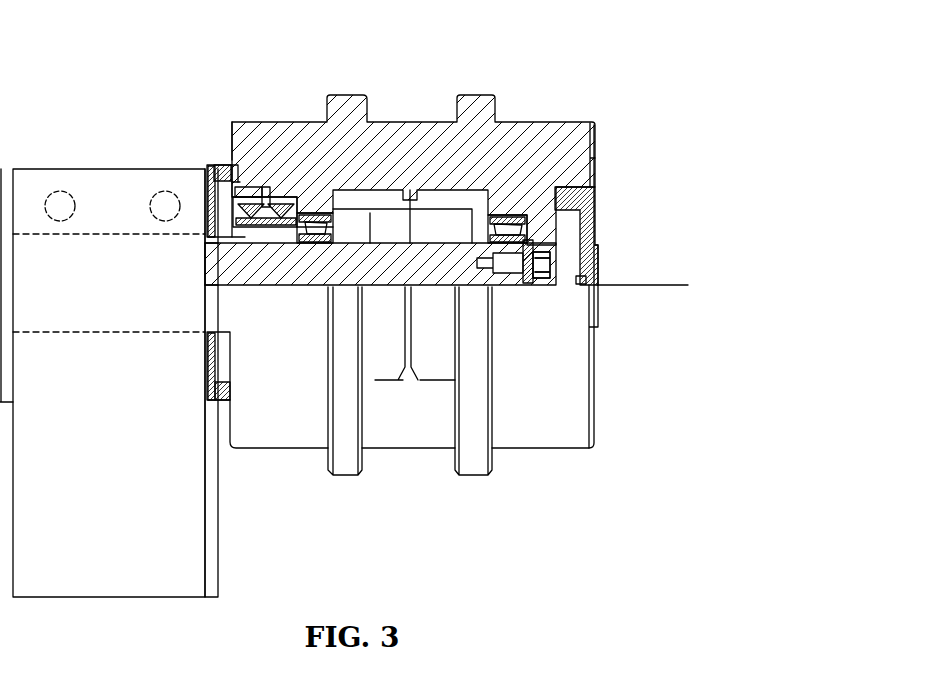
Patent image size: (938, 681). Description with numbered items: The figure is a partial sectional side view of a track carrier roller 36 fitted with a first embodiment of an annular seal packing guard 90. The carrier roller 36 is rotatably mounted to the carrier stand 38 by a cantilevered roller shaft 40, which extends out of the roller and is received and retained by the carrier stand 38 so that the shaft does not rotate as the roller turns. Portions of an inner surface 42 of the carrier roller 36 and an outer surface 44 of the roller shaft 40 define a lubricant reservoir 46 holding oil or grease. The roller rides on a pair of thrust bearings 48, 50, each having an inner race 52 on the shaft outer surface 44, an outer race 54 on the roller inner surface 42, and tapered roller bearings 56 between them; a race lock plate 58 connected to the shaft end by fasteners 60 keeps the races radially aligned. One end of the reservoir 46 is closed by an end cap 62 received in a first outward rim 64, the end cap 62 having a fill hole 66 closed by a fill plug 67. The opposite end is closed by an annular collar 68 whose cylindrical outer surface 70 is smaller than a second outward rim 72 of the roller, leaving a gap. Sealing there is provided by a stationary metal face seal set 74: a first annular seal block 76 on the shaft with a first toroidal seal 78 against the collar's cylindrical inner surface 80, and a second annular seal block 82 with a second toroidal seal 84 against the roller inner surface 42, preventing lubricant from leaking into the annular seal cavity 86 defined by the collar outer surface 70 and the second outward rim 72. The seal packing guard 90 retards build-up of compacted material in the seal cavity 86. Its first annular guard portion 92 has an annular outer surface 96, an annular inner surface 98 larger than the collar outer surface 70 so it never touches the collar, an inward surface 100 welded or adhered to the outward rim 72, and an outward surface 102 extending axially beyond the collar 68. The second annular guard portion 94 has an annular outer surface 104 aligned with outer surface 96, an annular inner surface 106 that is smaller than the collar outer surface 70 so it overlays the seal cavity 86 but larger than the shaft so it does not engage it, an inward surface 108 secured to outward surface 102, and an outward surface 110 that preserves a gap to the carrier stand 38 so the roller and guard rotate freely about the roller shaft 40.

The carrier roller 36 is at (527, 423).
The carrier stand 38 is at (67, 187).
The roller shaft 40 is at (377, 387).
The inner surface 42 is at (442, 230).
The outer surface 44 is at (436, 387).
The lubricant reservoir 46 is at (383, 223).
The thrust bearing 48 is at (303, 246).
The thrust bearing 50 is at (525, 190).
The inner race 52 is at (316, 245).
The outer race 54 is at (305, 195).
The tapered roller bearings 56 is at (370, 190).
The race lock plate 58 is at (540, 284).
The fasteners 60 is at (543, 264).
The end cap 62 is at (598, 197).
The first outward rim 64 is at (593, 188).
The fill hole 66 is at (600, 283).
The fill plug 67 is at (586, 284).
The annular collar 68 is at (225, 338).
The outer surface 70 is at (251, 200).
The second outward rim 72 is at (245, 196).
The metal face seal set 74 is at (291, 192).
The first annular seal block 76 is at (262, 241).
The first toroidal seal 78 is at (213, 205).
The inner surface 80 is at (214, 270).
The second annular seal block 82 is at (276, 241).
The second toroidal seal 84 is at (312, 135).
The seal cavity 86 is at (282, 196).
The seal packing guard 90 is at (216, 164).
The first annular guard portion 92 is at (228, 404).
The second annular guard portion 94 is at (212, 385).
The annular outer surface 96 is at (226, 160).
The annular inner surface 98 is at (212, 200).
The inward surface 100 is at (213, 163).
The outward surface 102 is at (223, 384).
The annular outer surface 104 is at (217, 160).
The annular inner surface 106 is at (214, 244).
The inward surface 108 is at (209, 348).
The outward surface 110 is at (210, 362).